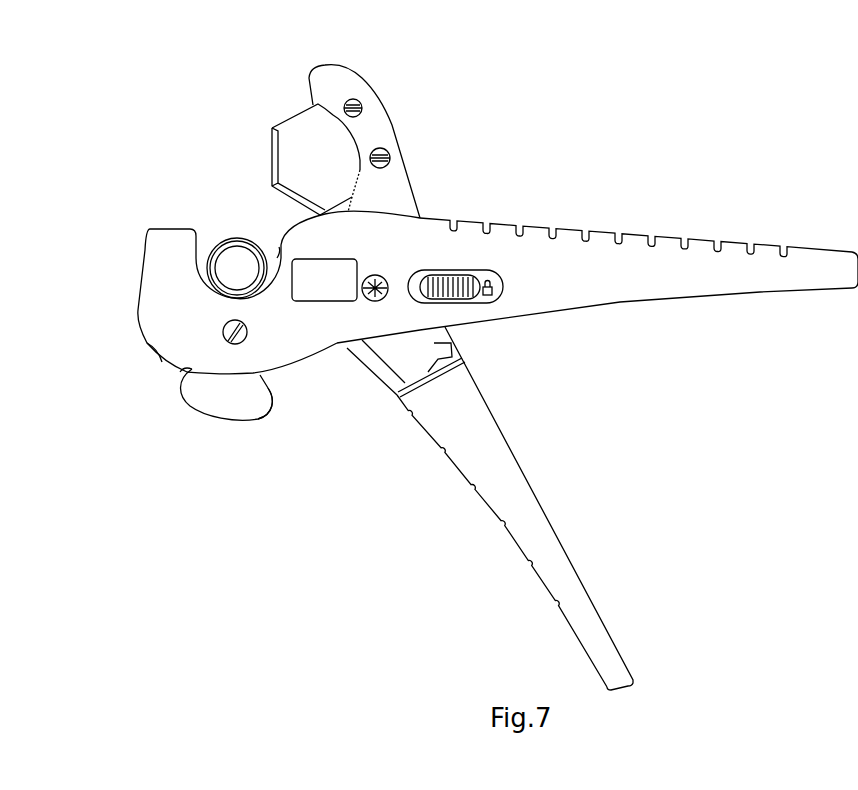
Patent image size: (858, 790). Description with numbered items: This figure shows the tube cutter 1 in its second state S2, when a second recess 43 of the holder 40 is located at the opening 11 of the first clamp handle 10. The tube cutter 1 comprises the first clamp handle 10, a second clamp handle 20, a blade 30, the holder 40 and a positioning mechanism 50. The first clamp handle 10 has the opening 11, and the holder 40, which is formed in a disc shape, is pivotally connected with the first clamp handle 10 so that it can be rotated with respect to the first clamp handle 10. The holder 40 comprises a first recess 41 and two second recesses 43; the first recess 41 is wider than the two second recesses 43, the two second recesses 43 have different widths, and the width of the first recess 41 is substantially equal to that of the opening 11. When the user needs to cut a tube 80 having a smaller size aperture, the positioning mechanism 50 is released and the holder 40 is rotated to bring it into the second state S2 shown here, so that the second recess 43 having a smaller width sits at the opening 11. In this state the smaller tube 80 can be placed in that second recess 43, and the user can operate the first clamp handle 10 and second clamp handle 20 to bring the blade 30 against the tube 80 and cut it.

The tube cutter 1 is at (84, 82).
The first clamp handle 10 is at (707, 247).
The opening 11 is at (194, 228).
The second clamp handle 20 is at (560, 538).
The blade 30 is at (293, 124).
The holder 40 is at (207, 405).
The first recess 41 is at (284, 398).
The second recess 43 is at (272, 247).
The positioning mechanism 50 is at (224, 324).
The tube 80 is at (235, 239).
The second state S2 is at (138, 363).